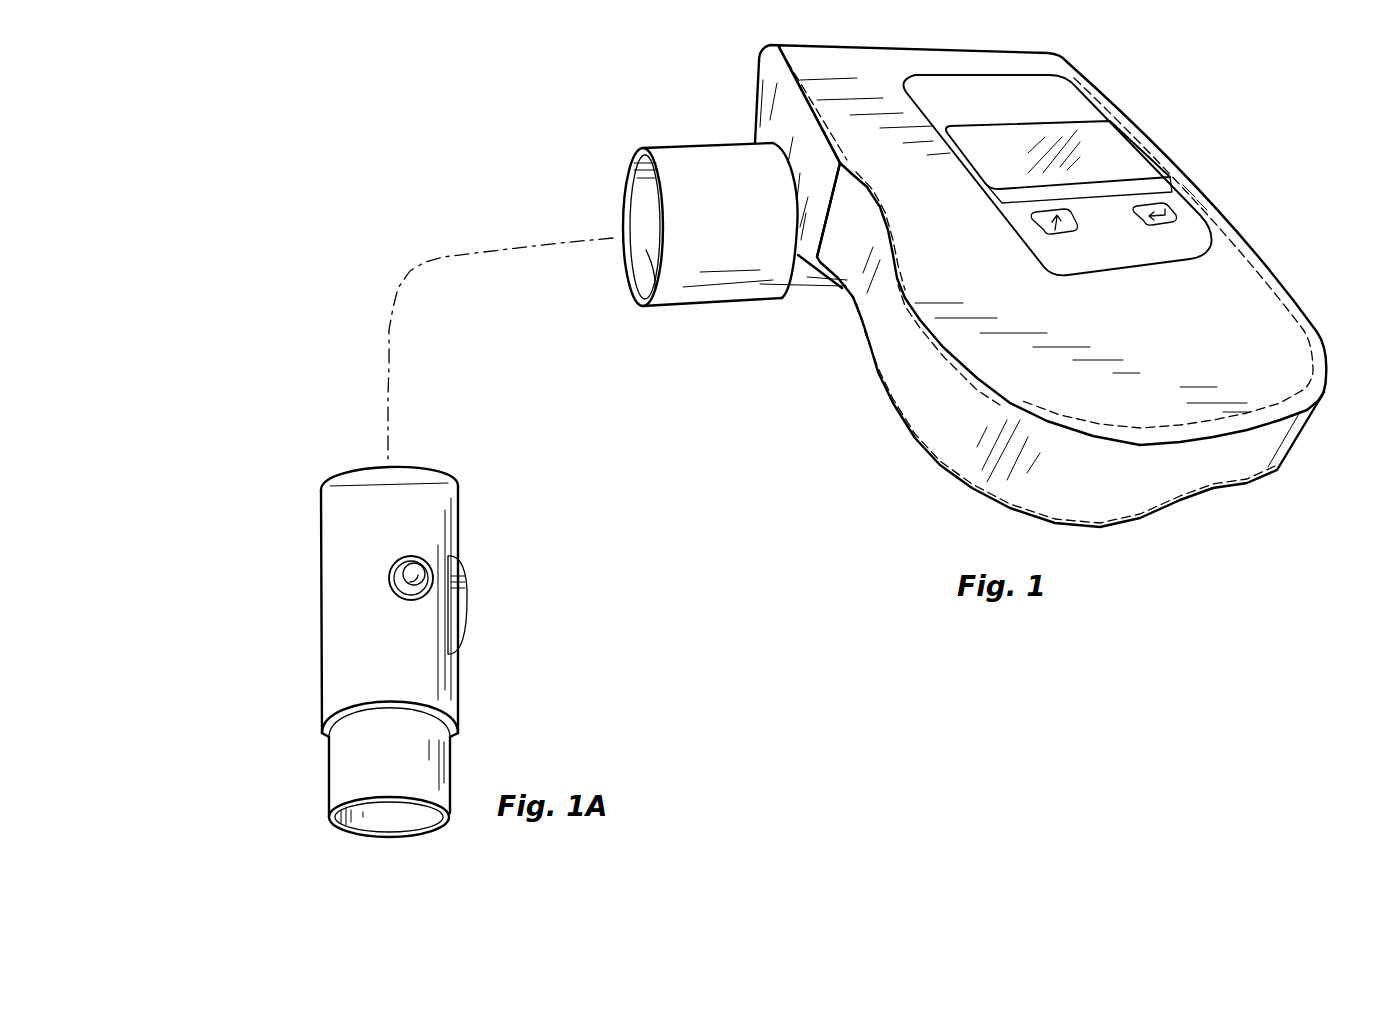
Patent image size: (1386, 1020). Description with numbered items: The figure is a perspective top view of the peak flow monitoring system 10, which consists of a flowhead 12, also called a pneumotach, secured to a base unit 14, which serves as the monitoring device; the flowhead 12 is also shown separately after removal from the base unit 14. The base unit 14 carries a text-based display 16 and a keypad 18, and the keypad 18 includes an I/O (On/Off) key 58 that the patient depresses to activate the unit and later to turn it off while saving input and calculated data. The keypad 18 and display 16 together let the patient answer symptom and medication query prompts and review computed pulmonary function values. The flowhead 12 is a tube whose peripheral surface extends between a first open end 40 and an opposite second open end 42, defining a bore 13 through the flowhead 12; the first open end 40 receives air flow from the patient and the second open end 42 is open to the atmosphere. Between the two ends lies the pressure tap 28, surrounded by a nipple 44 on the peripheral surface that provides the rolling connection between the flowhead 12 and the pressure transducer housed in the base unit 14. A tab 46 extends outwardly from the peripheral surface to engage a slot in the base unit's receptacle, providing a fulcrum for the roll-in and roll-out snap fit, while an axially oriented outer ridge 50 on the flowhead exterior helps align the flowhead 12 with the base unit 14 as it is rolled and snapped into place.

In FIG. 1, the peak flow monitoring system 10 is at (1249, 158).
In FIG. 1, the flowhead 12 is at (700, 168).
In FIG. 1A, the flowhead 12 is at (348, 492).
In FIG. 1, the bore 13 is at (650, 216).
In FIG. 1, the base unit 14 is at (812, 59).
In FIG. 1, the display 16 is at (1110, 153).
In FIG. 1, the keypad 18 is at (1047, 220).
In FIG. 1, the I/O (On/Off) key 58 is at (1178, 216).
In FIG. 1A, the pressure tap 28 is at (421, 567).
In FIG. 1, the first open end 40 is at (650, 263).
In FIG. 1A, the first open end 40 is at (384, 812).
In FIG. 1A, the second open end 42 is at (419, 469).
In FIG. 1A, the nipple 44 is at (404, 578).
In FIG. 1A, the tab 46 is at (459, 609).
In FIG. 1A, the outer ridge 50 is at (340, 688).